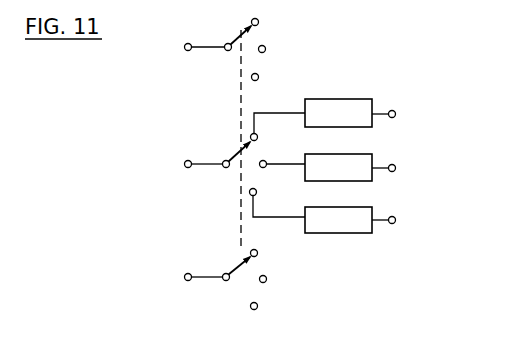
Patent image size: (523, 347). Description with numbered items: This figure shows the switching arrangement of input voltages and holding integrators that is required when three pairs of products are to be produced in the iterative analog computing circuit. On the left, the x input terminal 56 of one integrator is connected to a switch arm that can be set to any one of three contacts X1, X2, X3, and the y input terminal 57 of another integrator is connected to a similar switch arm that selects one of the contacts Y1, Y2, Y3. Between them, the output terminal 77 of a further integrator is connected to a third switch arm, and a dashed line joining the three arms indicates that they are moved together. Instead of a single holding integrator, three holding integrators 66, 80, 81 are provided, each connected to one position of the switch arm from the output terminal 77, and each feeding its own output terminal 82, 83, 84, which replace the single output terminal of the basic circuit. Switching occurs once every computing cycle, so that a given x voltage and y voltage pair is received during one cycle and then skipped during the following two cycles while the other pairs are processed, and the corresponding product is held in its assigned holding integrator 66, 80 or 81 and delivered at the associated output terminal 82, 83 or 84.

The x input terminal 56 is at (204, 41).
The output terminal of integrator 77 is at (203, 158).
The y input terminal 57 is at (203, 272).
The holding integrator 66 is at (338, 113).
The holding integrator 80 is at (338, 167).
The holding integrator 81 is at (338, 220).
The output terminal 82 is at (399, 115).
The output terminal 83 is at (398, 168).
The output terminal 84 is at (398, 221).
The x input voltage contact X1 is at (272, 25).
The x input voltage contact X2 is at (275, 53).
The x input voltage contact X3 is at (268, 81).
The y input voltage contact Y1 is at (267, 255).
The y input voltage contact Y2 is at (275, 284).
The y input voltage contact Y3 is at (267, 311).